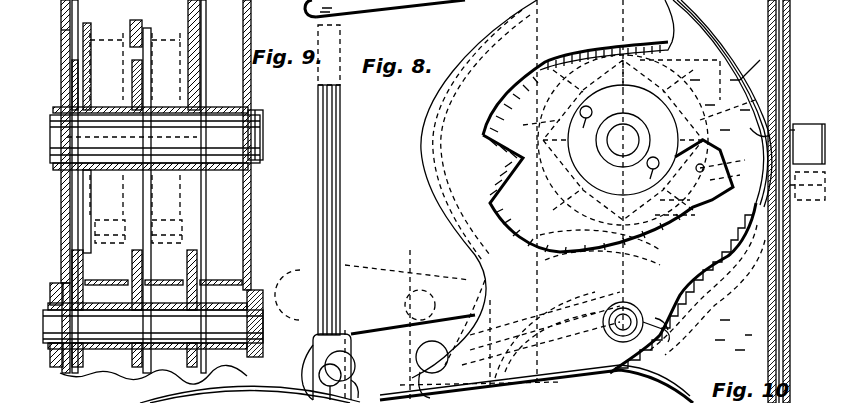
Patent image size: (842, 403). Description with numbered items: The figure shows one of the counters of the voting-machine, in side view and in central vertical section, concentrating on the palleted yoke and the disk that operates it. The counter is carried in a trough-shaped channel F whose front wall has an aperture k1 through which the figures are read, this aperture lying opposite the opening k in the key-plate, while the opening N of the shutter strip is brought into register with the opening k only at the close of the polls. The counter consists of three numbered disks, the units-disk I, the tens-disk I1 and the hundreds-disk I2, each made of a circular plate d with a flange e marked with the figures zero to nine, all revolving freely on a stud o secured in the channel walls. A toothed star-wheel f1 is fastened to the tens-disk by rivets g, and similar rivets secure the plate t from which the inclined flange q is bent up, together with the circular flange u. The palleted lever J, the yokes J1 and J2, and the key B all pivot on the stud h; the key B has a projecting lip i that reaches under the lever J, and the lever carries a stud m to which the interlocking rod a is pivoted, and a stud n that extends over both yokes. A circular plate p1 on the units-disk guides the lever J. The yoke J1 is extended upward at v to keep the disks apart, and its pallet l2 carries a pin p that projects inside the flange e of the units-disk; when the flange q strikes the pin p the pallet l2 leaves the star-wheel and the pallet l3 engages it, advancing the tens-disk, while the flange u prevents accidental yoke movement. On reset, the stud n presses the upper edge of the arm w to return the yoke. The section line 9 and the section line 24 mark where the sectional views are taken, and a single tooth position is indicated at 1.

In FIG. 9, the channel F is at (61, 232).
In FIG. 8, the channel F is at (752, 201).
In FIG. 9, the key B is at (52, 284).
In FIG. 8, the key B is at (809, 144).
In FIG. 9, the palleted lever J is at (62, 255).
In FIG. 8, the palleted lever J is at (417, 325).
In FIG. 9, the palleted yoke J1 is at (142, 352).
In FIG. 8, the palleted yoke J1 is at (456, 201).
In FIG. 9, the palleted yoke J2 is at (197, 352).
In FIG. 9, the plate t is at (116, 186).
In FIG. 8, the plate t is at (623, 140).
In FIG. 9, the upward extension of yoke v is at (142, 26).
In FIG. 8, the upward extension of yoke v is at (608, 40).
In FIG. 9, the star-wheel f1 is at (188, 88).
In FIG. 8, the star-wheel f1 is at (680, 80).
In FIG. 9, the circular plate p1 is at (61, 35).
In FIG. 9, the circular flange u is at (105, 40).
In FIG. 9, the circular plate d is at (156, 124).
In FIG. 8, the circular plate d is at (600, 236).
In FIG. 9, the inclined flange q is at (138, 231).
In FIG. 9, the stud o is at (156, 138).
In FIG. 8, the stud o is at (623, 165).
In FIG. 9, the pin p is at (132, 138).
In FIG. 8, the pin p is at (720, 169).
In FIG. 9, the flange e is at (163, 142).
In FIG. 8, the flange e is at (750, 70).
In FIG. 9, the units-disk I is at (86, 280).
In FIG. 9, the tens-disk I1 is at (152, 280).
In FIG. 8, the tens-disk I1 is at (722, 93).
In FIG. 9, the hundreds-disk I2 is at (207, 280).
In FIG. 9, the stud h is at (262, 312).
In FIG. 8, the stud h is at (663, 330).
In FIG. 8, the projecting lip i is at (393, 9).
In FIG. 8, the interlocking rod a is at (340, 222).
In FIG. 8, the stud m is at (336, 368).
In FIG. 8, the pivot 24 is at (416, 281).
In FIG. 8, the stud n is at (432, 369).
In FIG. 8, the arm w is at (447, 327).
In FIG. 8, the rivets g is at (618, 149).
In FIG. 8, the pallet l3 is at (539, 124).
In FIG. 8, the line 1 is at (675, 212).
In FIG. 8, the pallet l2 is at (695, 150).
In FIG. 8, the pivot ring 9 is at (623, 342).
In FIG. 8, the aperture k1 is at (754, 125).
In FIG. 8, the aperture k is at (793, 128).
In FIG. 8, the opening N is at (790, 218).